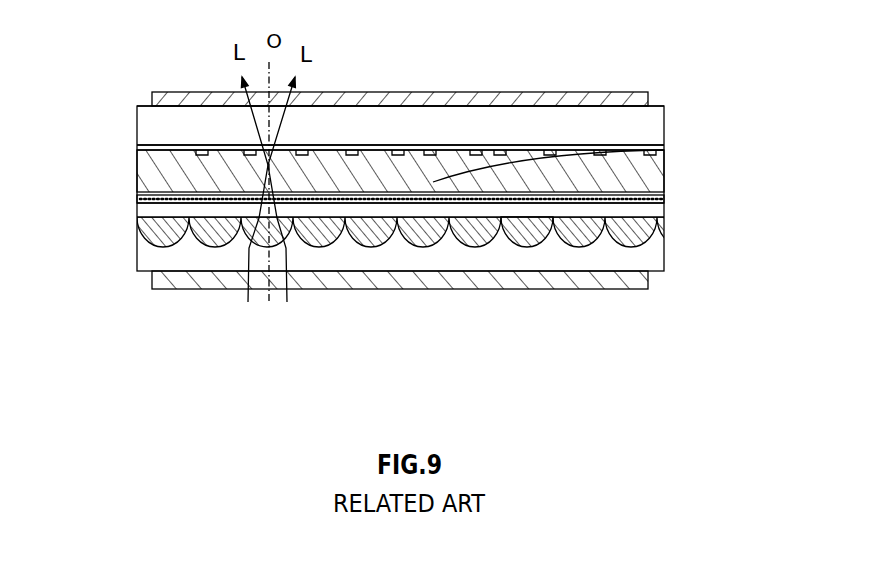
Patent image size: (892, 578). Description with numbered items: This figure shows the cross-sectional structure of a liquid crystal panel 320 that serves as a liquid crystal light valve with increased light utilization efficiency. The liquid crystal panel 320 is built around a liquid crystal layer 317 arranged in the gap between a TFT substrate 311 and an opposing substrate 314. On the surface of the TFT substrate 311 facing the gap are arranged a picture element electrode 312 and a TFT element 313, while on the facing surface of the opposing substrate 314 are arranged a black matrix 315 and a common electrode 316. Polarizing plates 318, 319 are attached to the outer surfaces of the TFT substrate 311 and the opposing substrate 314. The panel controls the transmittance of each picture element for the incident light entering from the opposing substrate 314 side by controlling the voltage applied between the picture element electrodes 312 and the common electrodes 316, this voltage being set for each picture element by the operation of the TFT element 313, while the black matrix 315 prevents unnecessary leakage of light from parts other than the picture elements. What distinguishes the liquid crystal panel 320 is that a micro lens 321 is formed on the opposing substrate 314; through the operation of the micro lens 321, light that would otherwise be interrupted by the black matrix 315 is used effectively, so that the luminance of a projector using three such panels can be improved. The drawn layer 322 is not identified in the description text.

The TFT substrate 311 is at (655, 125).
The picture element electrode 312 is at (475, 150).
The TFT element 313 is at (397, 150).
The opposing substrate 314 is at (440, 266).
The black matrix 315 is at (665, 196).
The common electrode 316 is at (665, 150).
The liquid crystal layer 317 is at (143, 177).
The polarizing plate 318 is at (152, 101).
The polarizing plate 319 is at (150, 283).
The liquid crystal panel 320 is at (380, 373).
The micro lens 321 is at (534, 248).
The air gap 322 is at (143, 210).